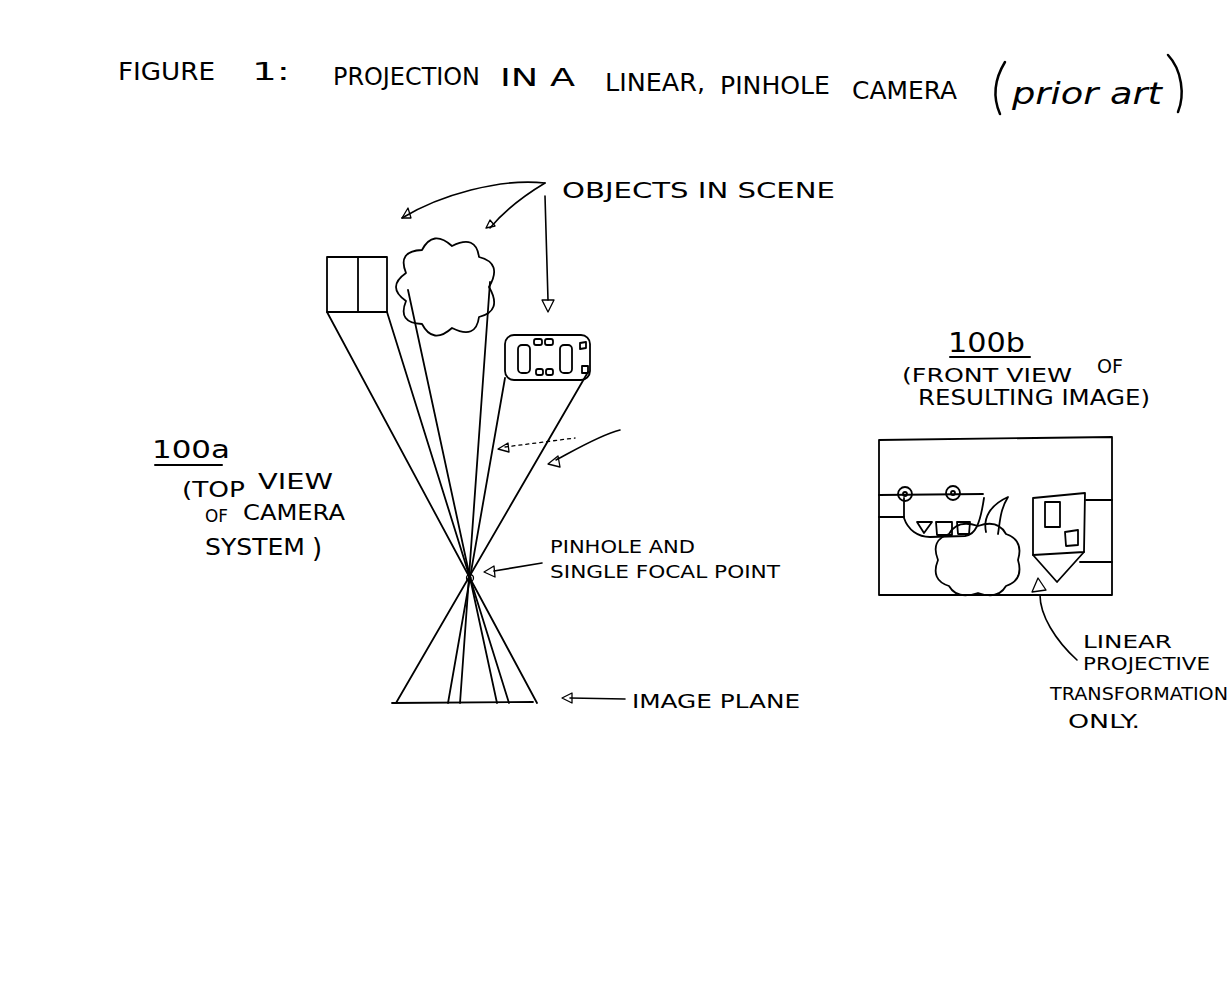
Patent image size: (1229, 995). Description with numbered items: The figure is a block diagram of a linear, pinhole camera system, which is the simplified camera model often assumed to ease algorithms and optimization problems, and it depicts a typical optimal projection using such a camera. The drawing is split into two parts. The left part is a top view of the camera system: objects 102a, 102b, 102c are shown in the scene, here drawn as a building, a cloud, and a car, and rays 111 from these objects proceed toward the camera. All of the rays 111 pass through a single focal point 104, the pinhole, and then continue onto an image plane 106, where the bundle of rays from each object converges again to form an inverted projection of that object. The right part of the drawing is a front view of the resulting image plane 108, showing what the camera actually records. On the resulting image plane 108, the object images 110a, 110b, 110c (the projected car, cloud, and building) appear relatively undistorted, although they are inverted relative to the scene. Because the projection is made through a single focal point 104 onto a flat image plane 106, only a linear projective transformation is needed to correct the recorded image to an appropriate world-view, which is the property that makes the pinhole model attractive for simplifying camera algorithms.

The object 102a is at (322, 278).
The object 102b is at (455, 248).
The object 102c is at (576, 334).
The single focal point 104 is at (466, 579).
The image plane 106 is at (390, 703).
The resulting image plane 108 is at (1112, 512).
The object image 110a is at (913, 536).
The object image 110b is at (962, 592).
The object image 110c is at (1112, 562).
The rays 111 is at (675, 477).